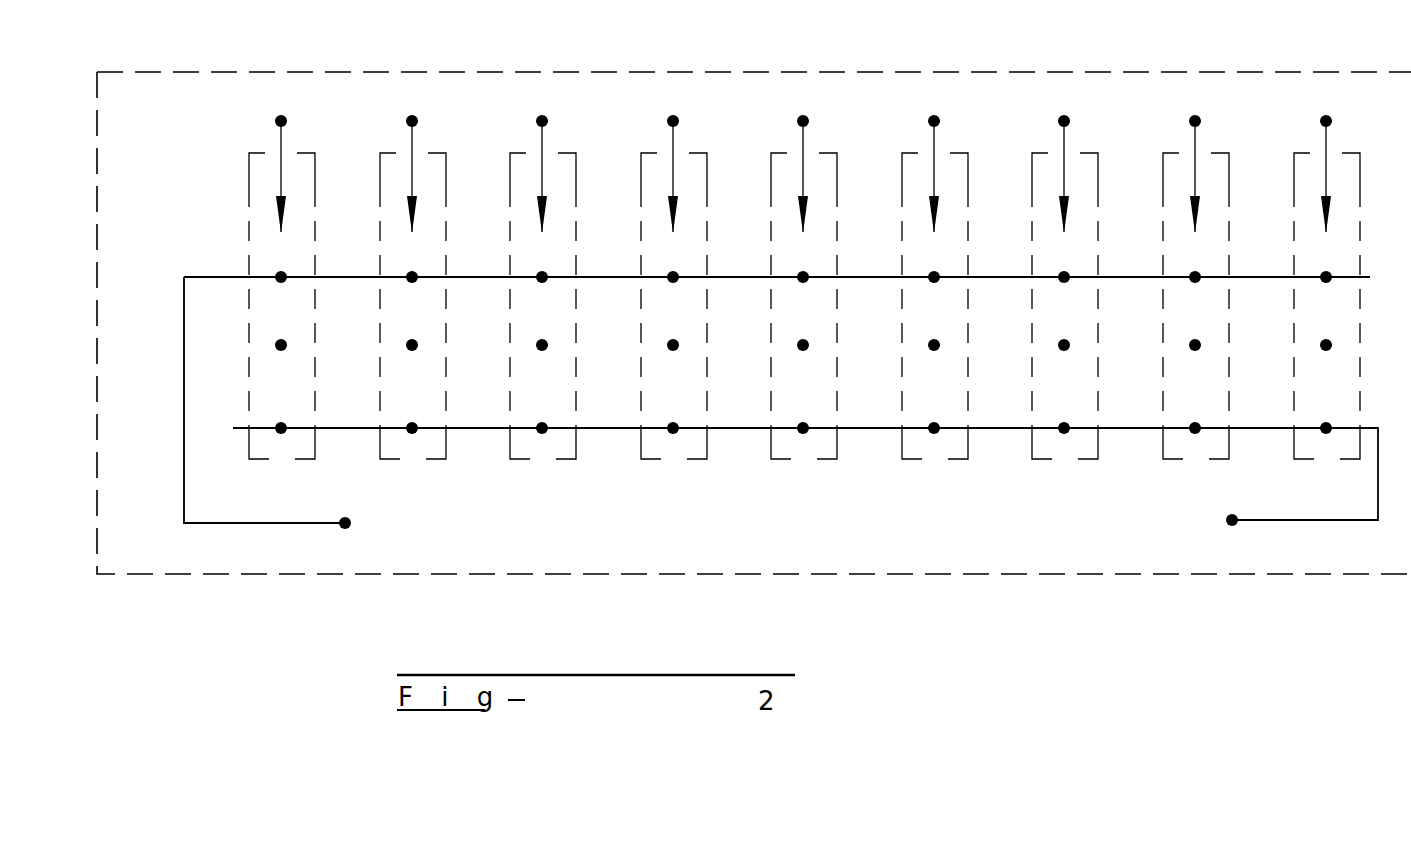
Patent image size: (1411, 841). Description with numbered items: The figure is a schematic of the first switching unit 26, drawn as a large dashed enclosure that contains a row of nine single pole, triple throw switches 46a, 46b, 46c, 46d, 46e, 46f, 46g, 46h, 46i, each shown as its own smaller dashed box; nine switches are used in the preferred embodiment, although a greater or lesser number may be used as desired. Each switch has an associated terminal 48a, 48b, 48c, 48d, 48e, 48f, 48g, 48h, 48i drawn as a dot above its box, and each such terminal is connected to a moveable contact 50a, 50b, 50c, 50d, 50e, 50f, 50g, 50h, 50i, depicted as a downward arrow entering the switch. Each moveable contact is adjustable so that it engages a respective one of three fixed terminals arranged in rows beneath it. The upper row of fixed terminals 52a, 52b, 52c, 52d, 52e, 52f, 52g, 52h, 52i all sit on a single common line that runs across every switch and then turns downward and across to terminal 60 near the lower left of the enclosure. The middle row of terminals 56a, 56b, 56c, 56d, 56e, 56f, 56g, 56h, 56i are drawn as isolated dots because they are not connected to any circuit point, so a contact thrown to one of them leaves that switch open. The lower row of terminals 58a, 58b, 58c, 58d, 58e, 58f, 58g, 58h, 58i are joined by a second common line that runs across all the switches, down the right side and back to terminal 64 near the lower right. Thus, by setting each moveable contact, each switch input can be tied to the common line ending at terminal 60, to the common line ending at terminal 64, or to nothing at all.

The first switching unit 26 is at (1334, 580).
The single pole, triple throw switch 46a is at (249, 175).
The single pole, triple throw switch 46b is at (379, 176).
The single pole, triple throw switch 46c is at (509, 176).
The single pole, triple throw switch 46d is at (640, 176).
The single pole, triple throw switch 46e is at (770, 176).
The single pole, triple throw switch 46f is at (901, 176).
The single pole, triple throw switch 46g is at (1031, 176).
The single pole, triple throw switch 46h is at (1162, 176).
The single pole, triple throw switch 46i is at (1293, 176).
The terminal 48a is at (281, 121).
The terminal 48b is at (412, 121).
The terminal 48c is at (542, 121).
The terminal 48d is at (673, 121).
The terminal 48e is at (803, 121).
The terminal 48f is at (934, 121).
The terminal 48g is at (1064, 121).
The terminal 48h is at (1195, 121).
The terminal 48i is at (1326, 121).
The moveable contact 50a is at (281, 211).
The moveable contact 50b is at (412, 211).
The moveable contact 50c is at (542, 211).
The moveable contact 50d is at (673, 211).
The moveable contact 50e is at (803, 211).
The moveable contact 50f is at (934, 211).
The moveable contact 50g is at (1064, 211).
The moveable contact 50h is at (1195, 211).
The moveable contact 50i is at (1326, 211).
The terminal 52a is at (281, 277).
The terminal 52b is at (412, 277).
The terminal 52c is at (542, 277).
The terminal 52d is at (673, 277).
The terminal 52e is at (803, 277).
The terminal 52f is at (934, 277).
The terminal 52g is at (1064, 277).
The terminal 52h is at (1195, 277).
The terminal 52i is at (1326, 277).
The terminal 56a is at (281, 345).
The terminal 56b is at (412, 345).
The terminal 56c is at (542, 345).
The terminal 56d is at (673, 345).
The terminal 56e is at (803, 345).
The terminal 56f is at (934, 345).
The terminal 56g is at (1064, 345).
The terminal 56h is at (1195, 345).
The terminal 56i is at (1326, 345).
The terminal 58a is at (281, 428).
The terminal 58b is at (412, 428).
The terminal 58c is at (542, 428).
The terminal 58d is at (673, 428).
The terminal 58e is at (803, 428).
The terminal 58f is at (934, 428).
The terminal 58g is at (1064, 428).
The terminal 58h is at (1195, 428).
The terminal 58i is at (1326, 428).
The terminal 60 is at (345, 523).
The terminal 64 is at (1232, 520).